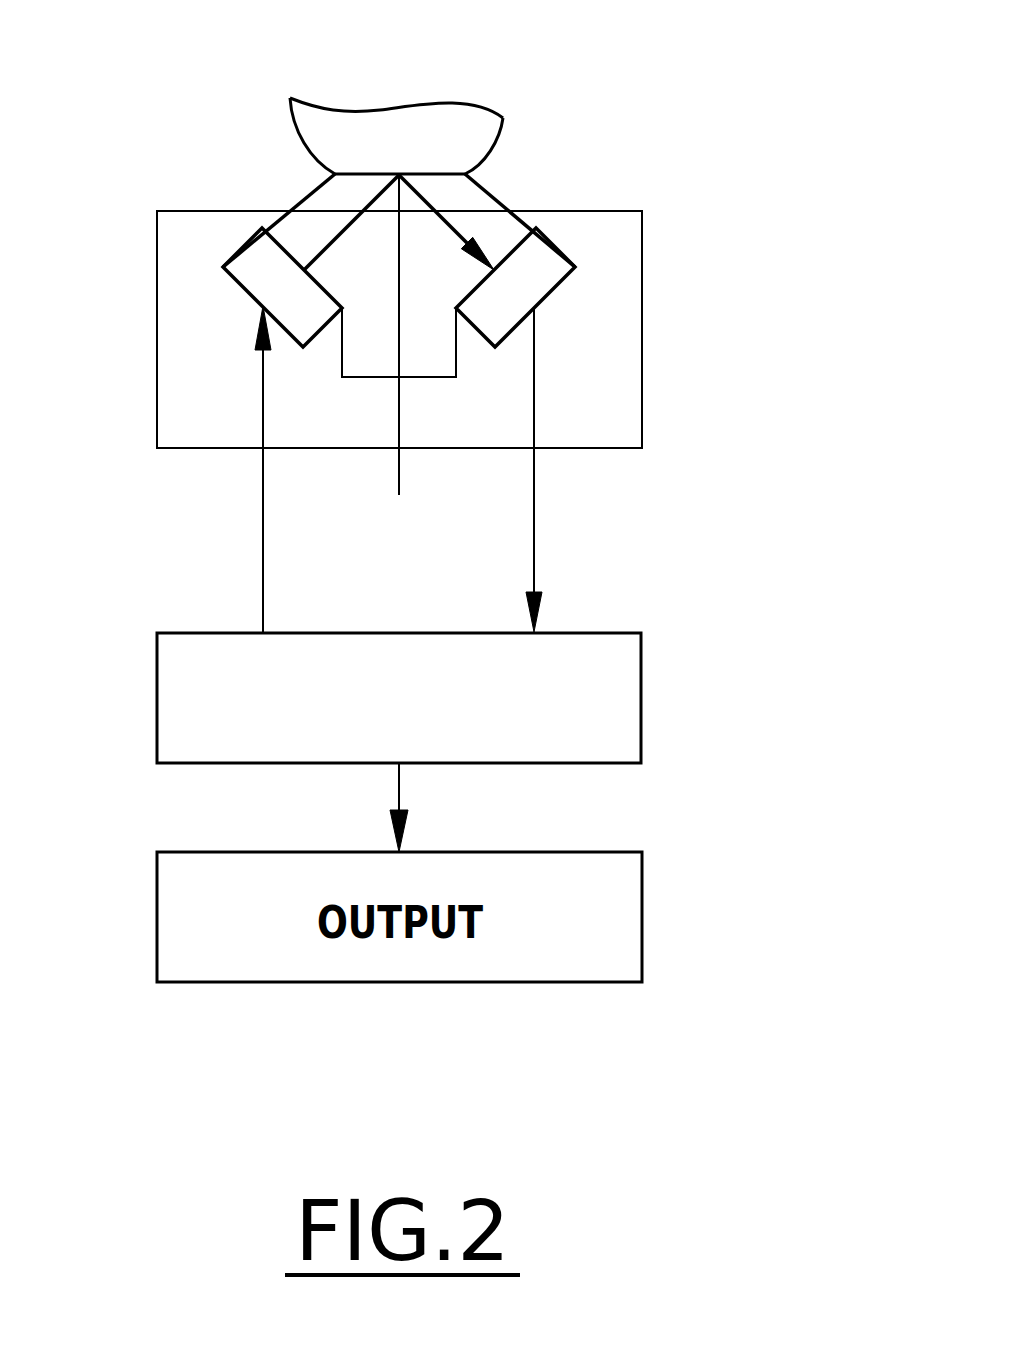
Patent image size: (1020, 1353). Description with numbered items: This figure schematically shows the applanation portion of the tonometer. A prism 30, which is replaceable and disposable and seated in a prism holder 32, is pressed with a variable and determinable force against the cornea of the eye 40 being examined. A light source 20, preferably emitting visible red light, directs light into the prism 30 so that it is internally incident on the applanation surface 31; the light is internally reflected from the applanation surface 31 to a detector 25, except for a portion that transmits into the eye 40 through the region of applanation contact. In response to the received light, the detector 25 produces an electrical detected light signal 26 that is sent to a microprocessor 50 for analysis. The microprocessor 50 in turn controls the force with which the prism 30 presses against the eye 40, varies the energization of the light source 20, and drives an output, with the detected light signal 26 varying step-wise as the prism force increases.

The light source 20 is at (260, 268).
The detector 25 is at (522, 275).
The detected light signal 26 is at (534, 522).
The prism 30 is at (330, 213).
The applanation surface 31 is at (470, 177).
The prism holder 32 is at (592, 247).
The eye 40 is at (374, 128).
The microprocessor 50 is at (618, 710).